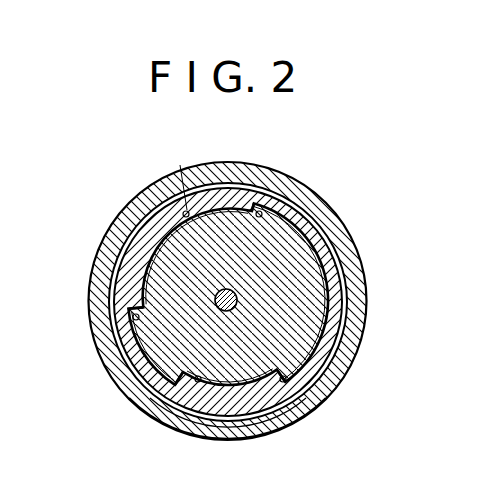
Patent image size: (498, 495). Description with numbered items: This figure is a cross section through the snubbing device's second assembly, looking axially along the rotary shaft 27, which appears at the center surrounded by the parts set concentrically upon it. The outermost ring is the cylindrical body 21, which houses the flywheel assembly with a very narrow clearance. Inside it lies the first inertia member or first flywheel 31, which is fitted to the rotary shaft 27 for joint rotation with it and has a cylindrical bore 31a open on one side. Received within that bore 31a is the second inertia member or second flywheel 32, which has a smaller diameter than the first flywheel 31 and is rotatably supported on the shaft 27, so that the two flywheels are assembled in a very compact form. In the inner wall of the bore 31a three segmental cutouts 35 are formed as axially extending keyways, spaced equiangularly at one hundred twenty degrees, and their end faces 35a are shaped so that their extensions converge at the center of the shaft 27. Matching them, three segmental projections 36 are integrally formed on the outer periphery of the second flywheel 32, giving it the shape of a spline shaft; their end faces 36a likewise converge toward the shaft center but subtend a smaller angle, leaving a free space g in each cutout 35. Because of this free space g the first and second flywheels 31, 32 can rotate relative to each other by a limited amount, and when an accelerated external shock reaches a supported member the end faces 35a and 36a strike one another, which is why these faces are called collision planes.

The cylindrical body 21 is at (147, 200).
The rotary shaft 27 is at (210, 312).
The first inertia member or first flywheel 31 is at (322, 253).
The cylindrical bore 31a is at (187, 414).
The second inertia member or second flywheel 32 is at (283, 440).
The segmental cutout 35 is at (265, 208).
The end face of segmental cutout 35a is at (187, 210).
The segmental projection 36 is at (262, 200).
The end face of segmental projection 36a is at (318, 305).
The free space g is at (258, 207).